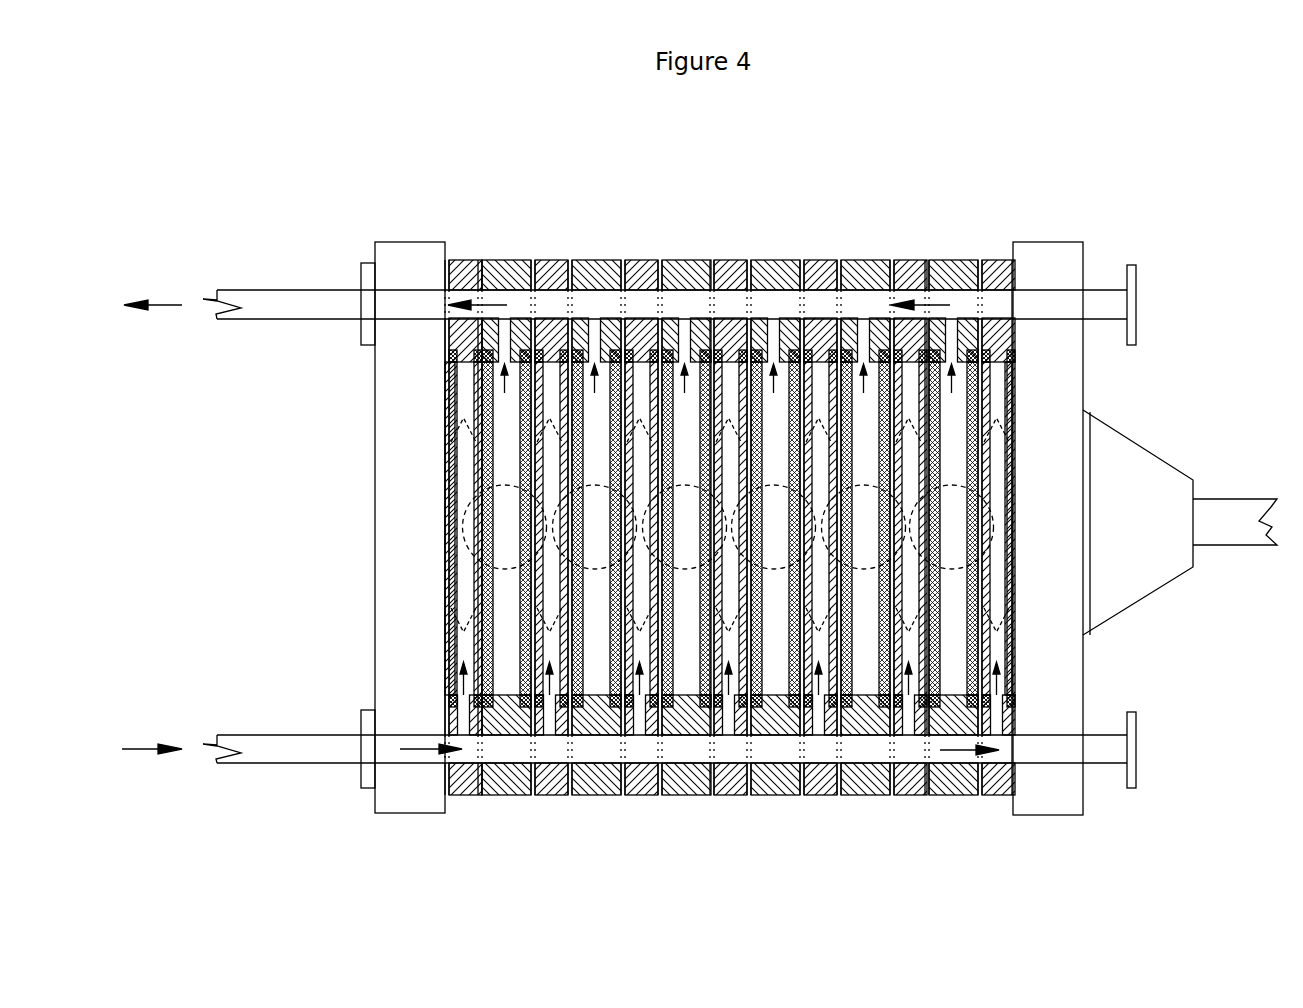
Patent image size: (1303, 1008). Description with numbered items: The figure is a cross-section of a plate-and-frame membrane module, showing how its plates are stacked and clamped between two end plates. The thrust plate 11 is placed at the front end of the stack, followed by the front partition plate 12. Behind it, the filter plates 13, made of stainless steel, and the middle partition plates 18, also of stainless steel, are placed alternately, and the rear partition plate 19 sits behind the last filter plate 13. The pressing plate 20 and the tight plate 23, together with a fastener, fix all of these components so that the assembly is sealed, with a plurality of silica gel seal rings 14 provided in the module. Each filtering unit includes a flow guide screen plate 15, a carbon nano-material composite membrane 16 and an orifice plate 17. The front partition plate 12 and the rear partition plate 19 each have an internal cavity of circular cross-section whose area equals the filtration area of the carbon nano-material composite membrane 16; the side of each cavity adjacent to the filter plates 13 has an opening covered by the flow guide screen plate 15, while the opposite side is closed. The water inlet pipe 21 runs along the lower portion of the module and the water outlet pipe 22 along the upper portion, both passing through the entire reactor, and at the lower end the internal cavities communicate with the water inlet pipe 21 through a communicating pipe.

The thrust plate 11 is at (410, 796).
The front partition plate 12 is at (462, 782).
The filter plate 13 is at (510, 782).
The silica gel seal ring 14 is at (545, 352).
The flow guide screen plate 15 is at (632, 362).
The carbon nano-material composite membrane 16 is at (680, 357).
The orifice plate 17 is at (768, 357).
The middle partition plate 18 is at (549, 790).
The rear partition plate 19 is at (995, 790).
The pressing plate 20 is at (1053, 790).
The water inlet pipe 21 is at (286, 752).
The water outlet pipe 22 is at (284, 321).
The tight plate 23 is at (1145, 568).